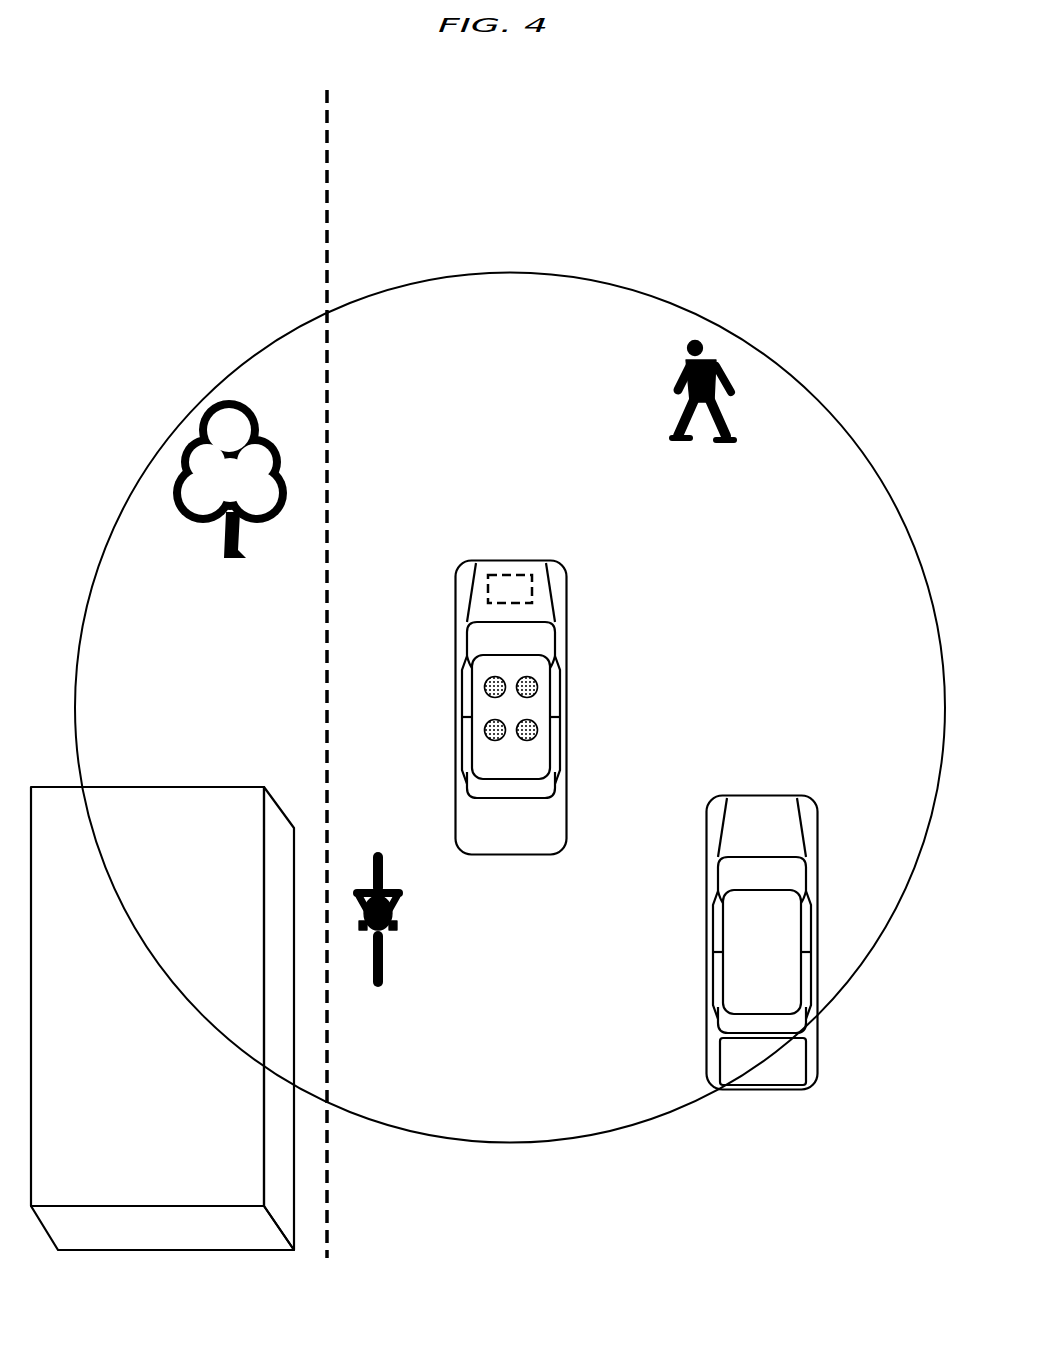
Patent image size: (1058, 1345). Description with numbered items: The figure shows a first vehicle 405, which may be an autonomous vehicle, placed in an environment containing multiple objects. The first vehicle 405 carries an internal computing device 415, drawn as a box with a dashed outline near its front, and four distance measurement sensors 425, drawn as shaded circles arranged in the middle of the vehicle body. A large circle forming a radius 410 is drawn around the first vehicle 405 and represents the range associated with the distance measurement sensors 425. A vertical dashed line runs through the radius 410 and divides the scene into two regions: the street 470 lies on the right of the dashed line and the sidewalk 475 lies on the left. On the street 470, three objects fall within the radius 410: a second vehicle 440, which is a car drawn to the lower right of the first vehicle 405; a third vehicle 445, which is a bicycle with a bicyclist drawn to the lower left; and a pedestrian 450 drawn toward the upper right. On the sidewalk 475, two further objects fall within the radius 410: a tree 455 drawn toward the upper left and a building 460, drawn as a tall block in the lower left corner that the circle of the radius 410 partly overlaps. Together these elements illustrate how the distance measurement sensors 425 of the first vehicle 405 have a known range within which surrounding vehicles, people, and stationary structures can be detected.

The first vehicle 405 is at (560, 844).
The radius 410 is at (560, 359).
The internal computing device 415 is at (695, 631).
The distance measurement sensors 425 is at (543, 738).
The second vehicle 440 is at (780, 974).
The third vehicle 445 is at (425, 994).
The pedestrian 450 is at (720, 484).
The tree 455 is at (245, 487).
The building 460 is at (165, 1047).
The street 470 is at (378, 177).
The sidewalk 475 is at (315, 177).